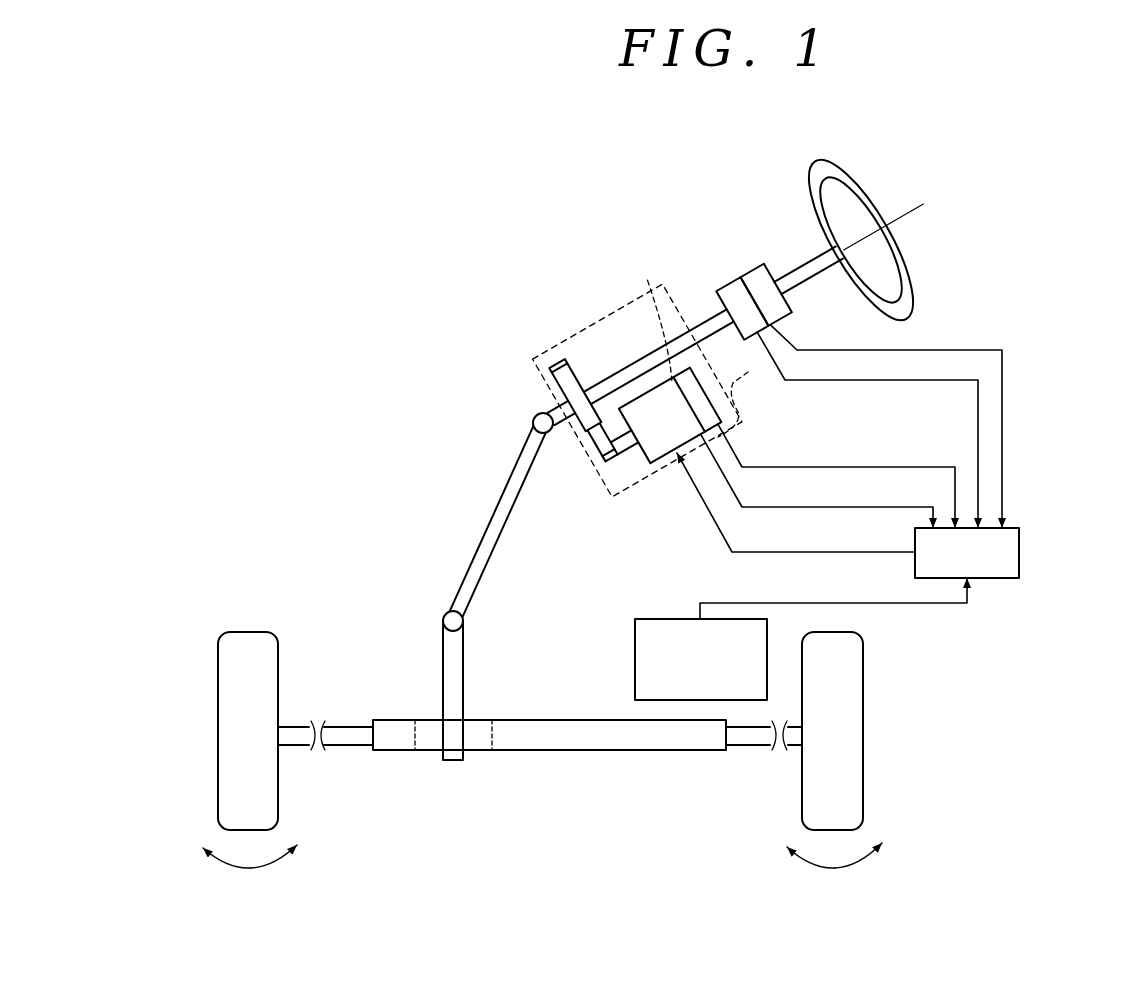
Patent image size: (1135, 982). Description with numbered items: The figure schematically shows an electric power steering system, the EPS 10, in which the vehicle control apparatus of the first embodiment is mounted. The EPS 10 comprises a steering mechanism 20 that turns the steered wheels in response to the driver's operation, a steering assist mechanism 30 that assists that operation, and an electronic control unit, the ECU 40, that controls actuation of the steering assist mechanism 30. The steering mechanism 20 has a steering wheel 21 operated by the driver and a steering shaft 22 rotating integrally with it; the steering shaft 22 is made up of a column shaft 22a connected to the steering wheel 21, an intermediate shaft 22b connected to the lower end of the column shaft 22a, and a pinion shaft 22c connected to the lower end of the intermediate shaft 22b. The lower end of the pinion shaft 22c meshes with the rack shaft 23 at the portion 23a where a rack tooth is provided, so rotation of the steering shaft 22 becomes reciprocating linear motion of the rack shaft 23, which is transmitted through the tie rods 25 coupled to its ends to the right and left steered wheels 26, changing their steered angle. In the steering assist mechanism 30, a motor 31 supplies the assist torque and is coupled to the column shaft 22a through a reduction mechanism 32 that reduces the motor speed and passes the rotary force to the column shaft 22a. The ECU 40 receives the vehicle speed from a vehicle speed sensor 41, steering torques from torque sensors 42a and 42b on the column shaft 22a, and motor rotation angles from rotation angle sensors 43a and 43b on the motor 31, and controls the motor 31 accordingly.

The electric power steering system (EPS) 10 is at (1063, 192).
The steering mechanism 20 is at (910, 265).
The steering wheel 21 is at (844, 172).
The steering shaft 22 is at (438, 420).
The column shaft 22a is at (537, 405).
The intermediate shaft 22b is at (499, 503).
The pinion shaft 22c is at (442, 638).
The rack shaft 23 is at (563, 722).
The rack tooth portion 23a is at (478, 722).
The tie rod 25 is at (348, 747).
The steered wheel 26 is at (218, 785).
The steering assist mechanism 30 is at (608, 316).
The motor 31 is at (640, 466).
The reduction mechanism 32 is at (600, 458).
The electronic control unit (ECU) 40 is at (1019, 553).
The vehicle speed sensor 41 is at (658, 619).
The torque sensor 42a is at (727, 284).
The torque sensor 42b is at (750, 272).
The rotation angle sensor 43a is at (647, 284).
The rotation angle sensor 43b is at (735, 405).